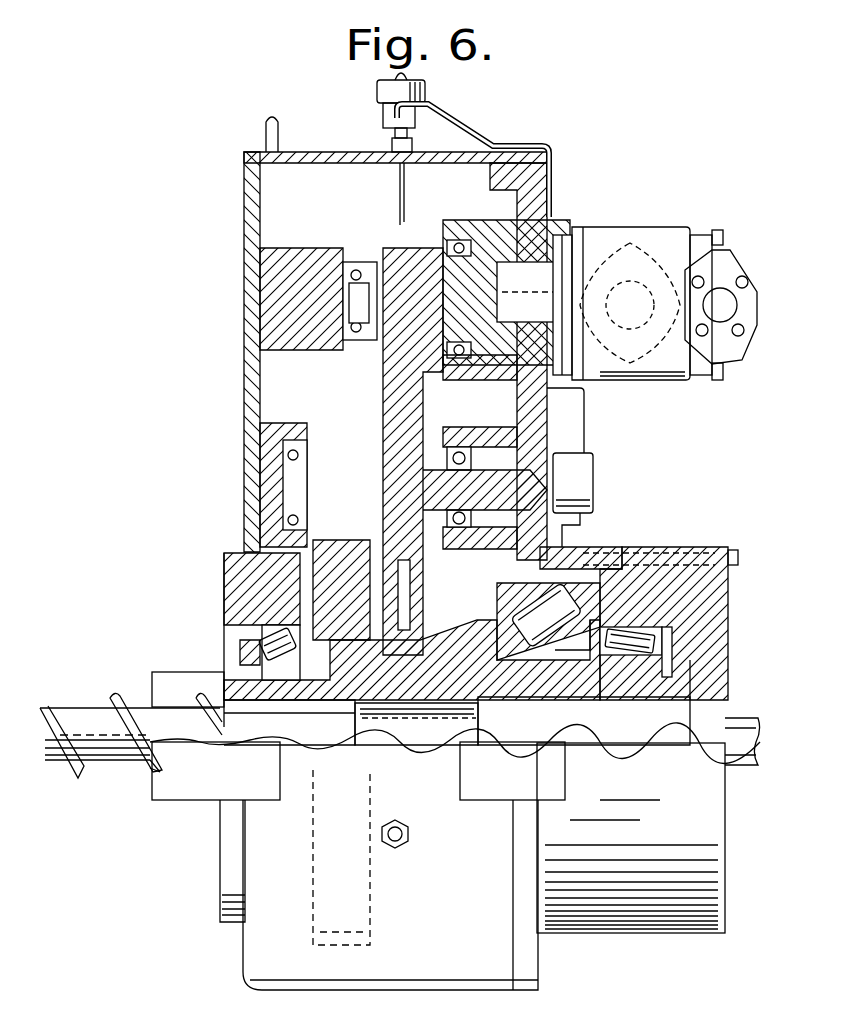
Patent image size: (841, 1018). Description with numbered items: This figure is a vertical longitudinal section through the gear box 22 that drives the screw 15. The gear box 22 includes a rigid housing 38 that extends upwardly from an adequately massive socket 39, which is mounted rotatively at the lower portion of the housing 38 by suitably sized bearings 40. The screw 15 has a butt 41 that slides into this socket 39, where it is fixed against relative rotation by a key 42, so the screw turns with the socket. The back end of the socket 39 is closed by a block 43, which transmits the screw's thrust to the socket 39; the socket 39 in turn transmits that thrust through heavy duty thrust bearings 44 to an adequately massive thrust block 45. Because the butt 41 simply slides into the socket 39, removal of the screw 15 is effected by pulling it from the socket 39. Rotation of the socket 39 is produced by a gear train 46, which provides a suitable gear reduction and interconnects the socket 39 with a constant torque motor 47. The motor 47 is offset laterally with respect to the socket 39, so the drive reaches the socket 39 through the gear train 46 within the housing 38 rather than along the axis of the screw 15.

The screw 15 is at (86, 700).
The gear box 22 is at (420, 386).
The housing 38 is at (244, 388).
The socket 39 is at (468, 636).
The bearings 40 is at (278, 642).
The butt 41 is at (303, 720).
The key 42 is at (407, 706).
The block 43 is at (612, 728).
The thrust bearings 44 is at (572, 560).
The thrust block 45 is at (716, 593).
The gear train 46 is at (396, 306).
The constant torque motor 47 is at (657, 236).